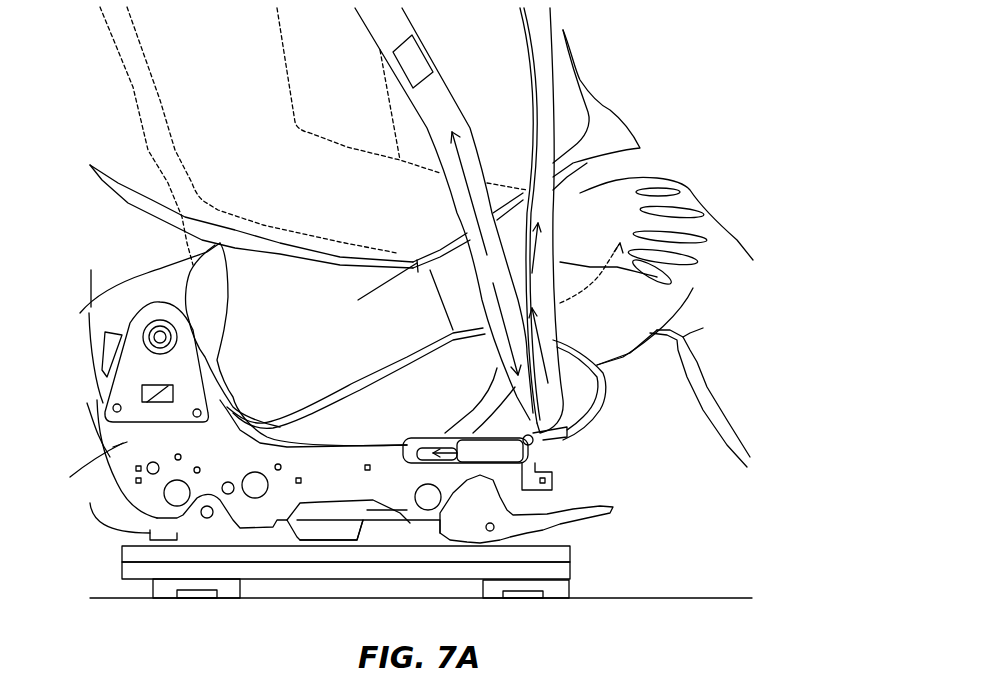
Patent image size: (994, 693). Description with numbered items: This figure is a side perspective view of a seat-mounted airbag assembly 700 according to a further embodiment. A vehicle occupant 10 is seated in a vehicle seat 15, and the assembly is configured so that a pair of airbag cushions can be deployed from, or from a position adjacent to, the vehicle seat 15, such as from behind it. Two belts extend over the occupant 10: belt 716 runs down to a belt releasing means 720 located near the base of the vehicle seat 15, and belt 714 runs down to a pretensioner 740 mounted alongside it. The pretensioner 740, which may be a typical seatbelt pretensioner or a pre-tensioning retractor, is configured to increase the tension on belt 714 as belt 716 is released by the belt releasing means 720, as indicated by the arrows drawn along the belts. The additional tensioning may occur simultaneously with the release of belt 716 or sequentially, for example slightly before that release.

The vehicle occupant 10 is at (738, 228).
The vehicle seat 15 is at (125, 445).
The seat-mounted airbag assembly 700 is at (687, 93).
The belt 714 is at (440, 87).
The belt 716 is at (547, 117).
The belt releasing means 720 is at (537, 450).
The pretensioner 740 is at (600, 500).